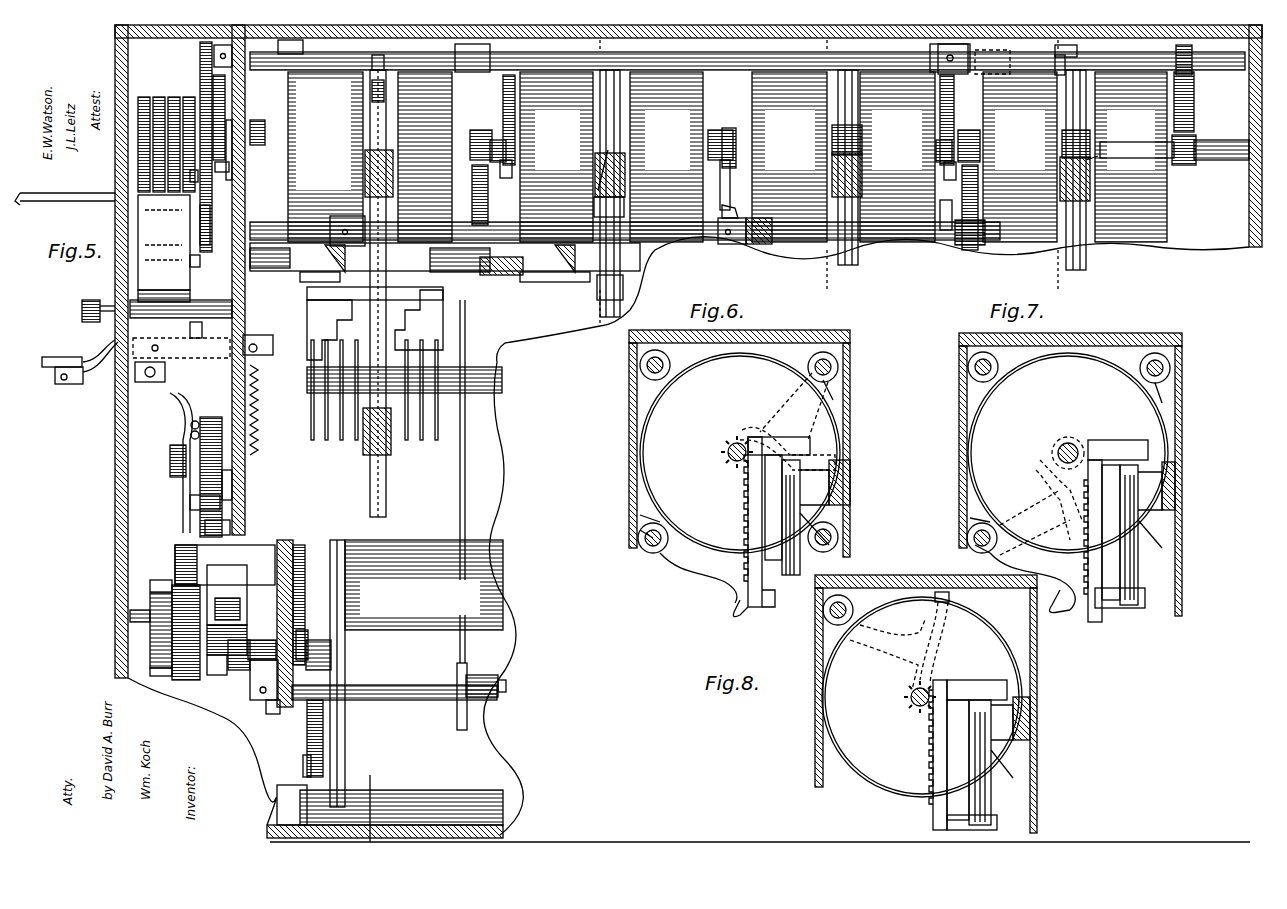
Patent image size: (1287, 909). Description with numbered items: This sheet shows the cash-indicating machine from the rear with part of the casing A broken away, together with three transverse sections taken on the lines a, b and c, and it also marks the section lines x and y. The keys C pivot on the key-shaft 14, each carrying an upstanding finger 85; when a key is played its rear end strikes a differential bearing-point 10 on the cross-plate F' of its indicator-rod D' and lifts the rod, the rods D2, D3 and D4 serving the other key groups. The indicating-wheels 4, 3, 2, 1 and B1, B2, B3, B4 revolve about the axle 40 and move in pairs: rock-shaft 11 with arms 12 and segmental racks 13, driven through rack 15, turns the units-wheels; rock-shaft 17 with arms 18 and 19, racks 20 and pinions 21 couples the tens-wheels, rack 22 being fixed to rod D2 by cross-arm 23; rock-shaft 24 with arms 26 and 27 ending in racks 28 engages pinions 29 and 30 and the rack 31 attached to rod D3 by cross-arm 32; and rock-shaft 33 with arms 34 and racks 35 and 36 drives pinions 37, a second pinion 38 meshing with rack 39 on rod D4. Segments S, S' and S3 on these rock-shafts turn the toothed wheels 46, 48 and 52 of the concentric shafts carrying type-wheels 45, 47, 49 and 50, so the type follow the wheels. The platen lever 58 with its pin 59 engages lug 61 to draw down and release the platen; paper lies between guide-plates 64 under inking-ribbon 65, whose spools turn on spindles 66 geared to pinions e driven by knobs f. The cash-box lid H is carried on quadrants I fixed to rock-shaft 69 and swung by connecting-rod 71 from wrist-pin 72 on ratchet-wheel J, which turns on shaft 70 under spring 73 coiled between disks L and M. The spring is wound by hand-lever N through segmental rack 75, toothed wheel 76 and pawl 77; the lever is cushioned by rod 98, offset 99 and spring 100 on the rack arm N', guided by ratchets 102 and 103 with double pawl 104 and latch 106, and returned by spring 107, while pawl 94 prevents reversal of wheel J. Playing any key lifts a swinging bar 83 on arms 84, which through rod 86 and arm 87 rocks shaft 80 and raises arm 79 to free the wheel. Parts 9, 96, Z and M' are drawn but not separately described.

In FIG. 5, the units indicating-wheel 1 is at (666, 157).
In FIG. 6, the units indicating-wheel 1 is at (652, 437).
In FIG. 5, the tens indicating-wheel 2 is at (556, 157).
In FIG. 5, the hundreds indicating-wheel 3 is at (355, 157).
In FIG. 5, the thousands indicating-wheel 4 is at (343, 512).
In FIG. 5, the pin 9 is at (735, 128).
In FIG. 5, the bearing-point 10 is at (379, 328).
In FIG. 5, the rock-shaft 11 is at (268, 222).
In FIG. 6, the rock-shaft 11 is at (838, 535).
In FIG. 5, the radial arms 12 is at (737, 206).
In FIG. 5, the segmental racks 13 is at (717, 185).
In FIG. 5, the key-shaft 14 is at (482, 367).
In FIG. 5, the vertical rack 15 is at (395, 118).
In FIG. 5, the rock-shaft 17 is at (747, 56).
In FIG. 6, the rock-shaft 17 is at (815, 365).
In FIG. 7, the rock-shaft 17 is at (1147, 366).
In FIG. 5, the radial arm 18 is at (500, 100).
In FIG. 5, the radial arm 19 is at (954, 100).
In FIG. 6, the radial arm 19 is at (802, 406).
In FIG. 7, the radial arm 19 is at (1165, 398).
In FIG. 5, the segmental racks 20 is at (504, 175).
In FIG. 5, the pinions 21 is at (498, 138).
In FIG. 5, the vertical rack 22 is at (624, 208).
In FIG. 6, the vertical rack 22 is at (748, 516).
In FIG. 5, the cross-arm 23 is at (590, 173).
In FIG. 6, the cross-arm 23 is at (787, 448).
In FIG. 5, the rock-shaft 24 is at (942, 230).
In FIG. 6, the rock-shaft 24 is at (656, 546).
In FIG. 7, the rock-shaft 24 is at (967, 535).
In FIG. 6, the radial arm 26 is at (688, 566).
In FIG. 7, the radial arm 26 is at (1025, 550).
In FIG. 6, the radial arm 27 is at (648, 511).
In FIG. 7, the radial arm 27 is at (977, 511).
In FIG. 5, the segmental rack 28 is at (488, 198).
In FIG. 6, the segmental rack 28 is at (730, 606).
In FIG. 7, the segmental rack 28 is at (1063, 606).
In FIG. 5, the pinion 29 is at (470, 150).
In FIG. 5, the pinion 30 is at (980, 150).
In FIG. 7, the vertical rack 31 is at (1095, 575).
In FIG. 5, the cross-arm 32 is at (840, 125).
In FIG. 7, the cross-arm 32 is at (1118, 450).
In FIG. 5, the rock-shaft 33 is at (1076, 70).
In FIG. 6, the rock-shaft 33 is at (655, 373).
In FIG. 7, the rock-shaft 33 is at (983, 375).
In FIG. 8, the rock-shaft 33 is at (838, 618).
In FIG. 6, the radial arms 34 is at (675, 362).
In FIG. 7, the radial arms 34 is at (1000, 365).
In FIG. 8, the radial arms 34 is at (855, 608).
In FIG. 5, the segmental rack 35 is at (257, 112).
In FIG. 5, the segmental rack 36 is at (1194, 105).
In FIG. 8, the segmental rack 36 is at (949, 596).
In FIG. 5, the pinions 37 is at (1186, 165).
In FIG. 5, the second pinion 38 is at (1076, 130).
In FIG. 8, the second pinion 38 is at (908, 700).
In FIG. 5, the vertical rack 39 is at (1100, 156).
In FIG. 8, the vertical rack 39 is at (933, 768).
In FIG. 5, the central axle 40 is at (712, 135).
In FIG. 6, the central axle 40 is at (737, 462).
In FIG. 7, the central axle 40 is at (1068, 443).
In FIG. 8, the central axle 40 is at (920, 709).
In FIG. 5, the type-wheel 45 is at (146, 136).
In FIG. 5, the toothed wheel 46 is at (229, 138).
In FIG. 5, the type-wheel 47 is at (160, 97).
In FIG. 5, the toothed wheel 48 is at (256, 166).
In FIG. 5, the type-wheel 49 is at (164, 242).
In FIG. 5, the type-wheel 50 is at (186, 97).
In FIG. 5, the toothed wheel 52 is at (198, 207).
In FIG. 5, the lever 58 is at (85, 380).
In FIG. 5, the lateral pin 59 is at (155, 338).
In FIG. 5, the lug 61 is at (150, 374).
In FIG. 5, the guide-plates 64 is at (65, 194).
In FIG. 5, the inking-ribbon 65 is at (164, 263).
In FIG. 5, the spindles 66 is at (200, 262).
In FIG. 5, the rock-shaft 69 is at (390, 805).
In FIG. 5, the shaft 70 is at (151, 630).
In FIG. 5, the connecting-rod 71 is at (307, 740).
In FIG. 5, the wrist-pin 72 is at (331, 655).
In FIG. 5, the helical spring 73 is at (238, 615).
In FIG. 5, the segmental rack 75 is at (175, 565).
In FIG. 5, the toothed wheel 76 is at (186, 636).
In FIG. 5, the pawl 77 is at (150, 586).
In FIG. 5, the arm 79 is at (272, 700).
In FIG. 5, the rock-shaft 80 is at (394, 691).
In FIG. 5, the swinging bars 83 is at (445, 259).
In FIG. 5, the arms 84 is at (443, 284).
In FIG. 5, the key-plate 85 is at (372, 376).
In FIG. 5, the connecting-rod 86 is at (460, 470).
In FIG. 5, the radial arm 87 is at (480, 675).
In FIG. 5, the pawl 94 is at (302, 630).
In FIG. 5, the gear 96 is at (227, 606).
In FIG. 5, the rod 98 is at (168, 420).
In FIG. 5, the offset 99 is at (168, 463).
In FIG. 5, the spring 100 is at (167, 433).
In FIG. 5, the segmental ratchet 102 is at (200, 484).
In FIG. 5, the segmental ratchet 103 is at (232, 478).
In FIG. 5, the double-ended pawl 104 is at (220, 498).
In FIG. 5, the spring-actuated latch 106 is at (230, 525).
In FIG. 5, the spring 107 is at (160, 668).
In FIG. 5, the outer casing A is at (120, 520).
In FIG. 5, the rear units indicating-wheel B1 is at (789, 157).
In FIG. 5, the rear tens indicating-wheel B2 is at (897, 157).
In FIG. 7, the rear tens indicating-wheel B2 is at (972, 440).
In FIG. 5, the rear hundreds indicating-wheel B3 is at (1020, 157).
In FIG. 5, the rear thousands indicating-wheel B4 is at (1131, 157).
In FIG. 8, the rear thousands indicating-wheel B4 is at (826, 680).
In FIG. 5, the keys C is at (379, 438).
In FIG. 5, the indicator-rod D' is at (387, 286).
In FIG. 5, the indicator-rod D2 is at (622, 252).
In FIG. 6, the indicator-rod D2 is at (782, 540).
In FIG. 5, the indicator-rod D3 is at (838, 243).
In FIG. 7, the indicator-rod D3 is at (1130, 555).
In FIG. 5, the indicator-rod D4 is at (1066, 245).
In FIG. 8, the indicator-rod D4 is at (975, 760).
In FIG. 5, the cross-plate F' is at (375, 323).
In FIG. 5, the curved lid H is at (405, 540).
In FIG. 5, the quadrants I is at (325, 738).
In FIG. 5, the ratchet-wheel J is at (305, 570).
In FIG. 5, the disk L is at (248, 712).
In FIG. 5, the disk M is at (222, 608).
In FIG. 5, the gear M' is at (207, 676).
In FIG. 5, the hand-lever N is at (206, 328).
In FIG. 5, the arm N' is at (161, 518).
In FIG. 5, the segment S is at (244, 158).
In FIG. 5, the segment S' is at (237, 117).
In FIG. 5, the segment S3 is at (200, 50).
In FIG. 5, the collar Z is at (457, 700).
In FIG. 5, the section line a is at (598, 182).
In FIG. 5, the section line b is at (830, 169).
In FIG. 5, the section line c is at (1060, 169).
In FIG. 5, the pinions e is at (181, 305).
In FIG. 5, the rotating knobs f is at (82, 303).
In FIG. 5, the section line x is at (135, 369).
In FIG. 5, the section line y is at (375, 44).